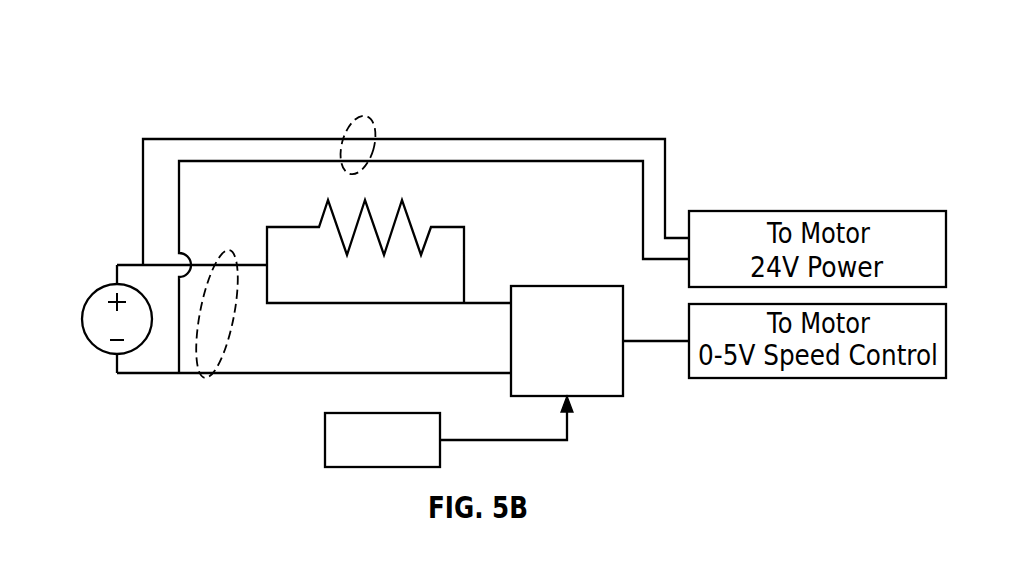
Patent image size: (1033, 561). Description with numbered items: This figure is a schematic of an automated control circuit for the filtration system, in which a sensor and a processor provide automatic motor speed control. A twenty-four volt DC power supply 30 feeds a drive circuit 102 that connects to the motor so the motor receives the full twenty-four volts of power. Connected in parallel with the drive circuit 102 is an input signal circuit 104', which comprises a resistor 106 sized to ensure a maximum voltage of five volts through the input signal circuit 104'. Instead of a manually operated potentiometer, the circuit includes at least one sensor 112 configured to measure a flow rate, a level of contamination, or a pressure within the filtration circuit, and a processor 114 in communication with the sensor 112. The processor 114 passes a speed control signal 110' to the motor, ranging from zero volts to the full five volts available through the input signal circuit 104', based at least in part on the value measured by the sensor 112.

The 24V DC power supply 30 is at (95, 290).
The drive circuit 102 is at (363, 114).
The input signal circuit 104' is at (314, 350).
The resistor 106 is at (408, 217).
The speed control signal 110' is at (656, 376).
The sensor 112 is at (405, 452).
The processor 114 is at (589, 353).